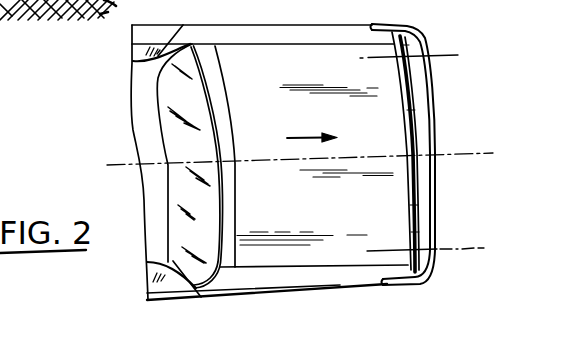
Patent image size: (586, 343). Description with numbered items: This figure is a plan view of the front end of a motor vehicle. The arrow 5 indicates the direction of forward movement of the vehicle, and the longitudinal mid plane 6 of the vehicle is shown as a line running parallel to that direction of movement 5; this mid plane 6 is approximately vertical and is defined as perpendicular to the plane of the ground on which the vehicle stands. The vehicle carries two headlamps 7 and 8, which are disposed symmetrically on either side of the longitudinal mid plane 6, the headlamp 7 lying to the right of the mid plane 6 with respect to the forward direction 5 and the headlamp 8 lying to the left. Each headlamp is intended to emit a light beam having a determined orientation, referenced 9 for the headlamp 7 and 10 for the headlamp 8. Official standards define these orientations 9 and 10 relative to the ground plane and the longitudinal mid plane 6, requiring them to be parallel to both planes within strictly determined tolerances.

The direction of forward movement 5 is at (290, 138).
The longitudinal mid plane 6 is at (470, 153).
The headlamp 7 is at (420, 243).
The headlamp 8 is at (406, 43).
The light beam orientation 9 is at (462, 251).
The light beam orientation 10 is at (440, 56).